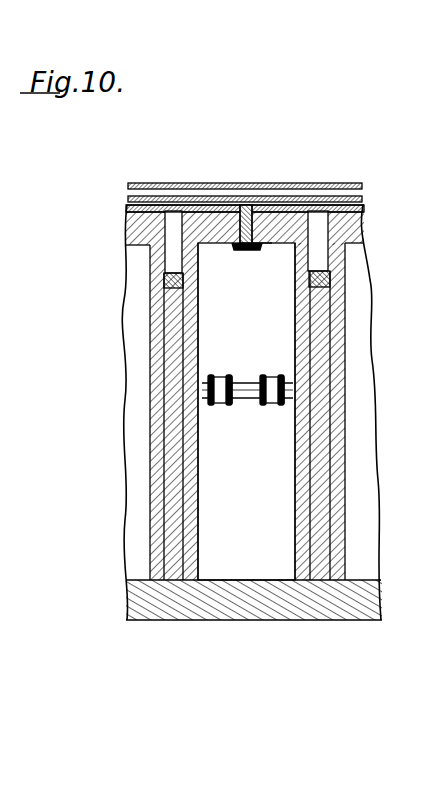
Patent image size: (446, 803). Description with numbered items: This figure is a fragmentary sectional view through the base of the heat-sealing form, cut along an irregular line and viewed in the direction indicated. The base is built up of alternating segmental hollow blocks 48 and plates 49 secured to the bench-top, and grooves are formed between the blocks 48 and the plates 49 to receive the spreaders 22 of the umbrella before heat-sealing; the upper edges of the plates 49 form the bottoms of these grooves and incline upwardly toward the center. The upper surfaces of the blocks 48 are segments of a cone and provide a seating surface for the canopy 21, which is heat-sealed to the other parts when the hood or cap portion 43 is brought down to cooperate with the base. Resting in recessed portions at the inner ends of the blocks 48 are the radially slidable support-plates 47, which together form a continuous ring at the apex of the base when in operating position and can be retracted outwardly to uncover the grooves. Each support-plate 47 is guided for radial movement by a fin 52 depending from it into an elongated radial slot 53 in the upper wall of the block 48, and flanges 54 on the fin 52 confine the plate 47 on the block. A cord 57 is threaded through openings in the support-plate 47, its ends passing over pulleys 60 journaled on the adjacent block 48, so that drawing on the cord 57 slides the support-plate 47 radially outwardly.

The segmental hollow block 48 is at (364, 229).
The plate 49 is at (340, 303).
The spreader 22 is at (328, 275).
The support-plate 47 is at (140, 205).
The hood or cap portion 43 is at (264, 183).
The canopy 21 is at (310, 196).
The slot 53 is at (246, 242).
The flange 54 is at (250, 251).
The fin 52 is at (258, 244).
The cord 57 is at (276, 377).
The pulley 60 is at (226, 405).